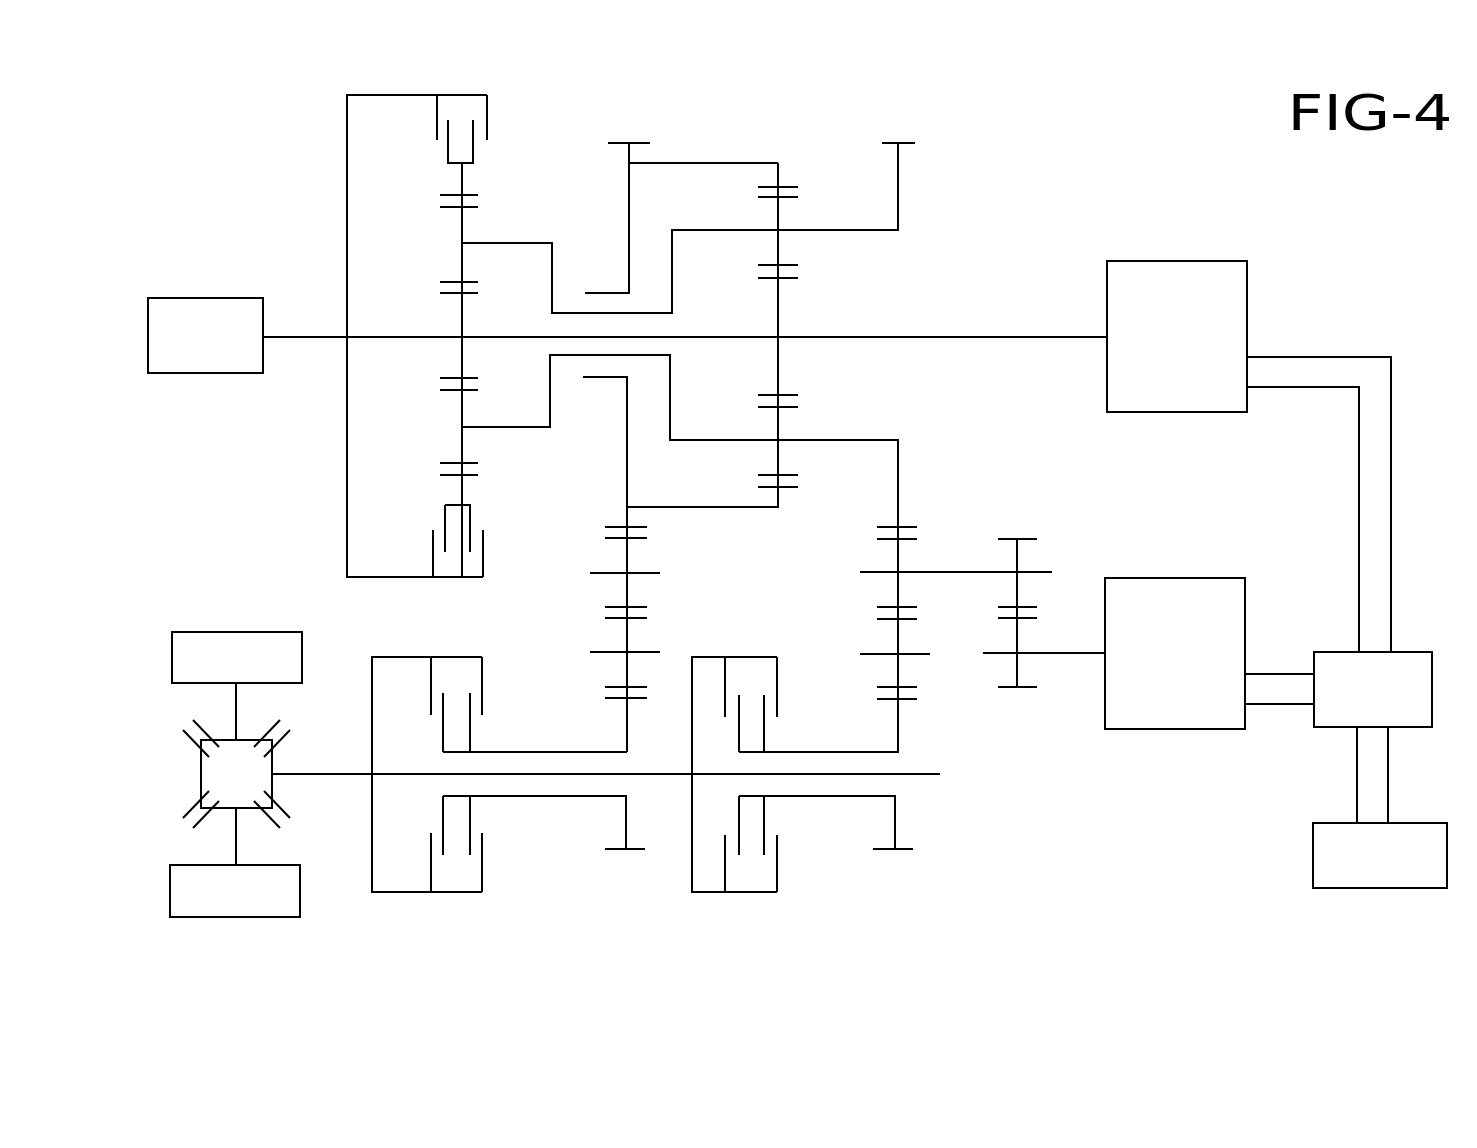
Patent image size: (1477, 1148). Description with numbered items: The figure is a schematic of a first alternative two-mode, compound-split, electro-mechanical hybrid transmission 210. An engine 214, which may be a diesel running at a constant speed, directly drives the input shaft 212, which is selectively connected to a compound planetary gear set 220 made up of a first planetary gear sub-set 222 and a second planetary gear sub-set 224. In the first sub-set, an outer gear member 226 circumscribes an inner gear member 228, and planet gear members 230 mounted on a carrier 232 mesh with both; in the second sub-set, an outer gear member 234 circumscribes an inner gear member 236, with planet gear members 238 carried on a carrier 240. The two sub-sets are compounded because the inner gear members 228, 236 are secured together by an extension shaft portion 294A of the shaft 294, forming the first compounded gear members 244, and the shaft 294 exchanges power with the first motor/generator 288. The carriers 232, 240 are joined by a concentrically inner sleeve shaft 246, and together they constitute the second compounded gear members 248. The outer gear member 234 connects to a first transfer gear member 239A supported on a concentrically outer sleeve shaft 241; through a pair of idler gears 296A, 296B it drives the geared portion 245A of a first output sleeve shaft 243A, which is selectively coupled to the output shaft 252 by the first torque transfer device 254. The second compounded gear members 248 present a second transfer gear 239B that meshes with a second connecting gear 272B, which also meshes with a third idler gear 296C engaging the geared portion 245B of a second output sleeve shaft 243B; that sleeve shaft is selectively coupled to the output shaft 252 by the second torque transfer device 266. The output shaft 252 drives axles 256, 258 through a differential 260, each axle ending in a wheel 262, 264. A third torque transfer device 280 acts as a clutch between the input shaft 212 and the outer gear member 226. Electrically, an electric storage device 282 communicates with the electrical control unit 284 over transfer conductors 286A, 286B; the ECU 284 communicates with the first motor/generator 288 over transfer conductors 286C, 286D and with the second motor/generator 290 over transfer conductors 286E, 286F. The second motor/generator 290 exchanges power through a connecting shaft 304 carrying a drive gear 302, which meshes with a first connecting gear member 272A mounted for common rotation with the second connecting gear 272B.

The hybrid transmission 210 is at (1022, 226).
The input shaft 212 is at (300, 337).
The engine 214 is at (205, 335).
The compound planetary gear set 220 is at (667, 152).
The first planetary gear sub-set 222 is at (521, 172).
The second planetary gear sub-set 224 is at (758, 153).
The outer gear member 226 is at (456, 190).
The inner gear member 228 is at (458, 322).
The planet gear members 230 is at (458, 230).
The carrier 232 is at (520, 243).
The outer gear member 234 is at (780, 172).
The inner gear member 236 is at (780, 308).
The planet gear members 238 is at (780, 212).
The first transfer gear member 239A is at (630, 517).
The second transfer gear 239B is at (900, 472).
The carrier 240 is at (713, 440).
The concentrically outer sleeve shaft 241 is at (598, 378).
The first output sleeve shaft 243A is at (543, 752).
The second output sleeve shaft 243B is at (830, 752).
The first compounded gear members 244 is at (516, 338).
The geared portion 245A is at (625, 828).
The geared portion 245B is at (897, 828).
The concentrically inner sleeve shaft 246 is at (672, 354).
The second compounded gear members 248 is at (574, 290).
The output shaft 252 is at (323, 774).
The first torque transfer device 254 is at (482, 875).
The axle 256 is at (236, 703).
The axle 258 is at (236, 845).
The differential 260 is at (201, 775).
The wheel 262 is at (237, 657).
The wheel 264 is at (235, 891).
The second torque transfer device 266 is at (777, 875).
The first connecting gear member 272A is at (1020, 557).
The second connecting gear 272B is at (896, 557).
The third torque transfer device 280 is at (415, 543).
The electric storage device 282 is at (1380, 855).
The electrical control unit 284 is at (1373, 689).
The transfer conductor 286A is at (1357, 795).
The transfer conductor 286B is at (1390, 793).
The transfer conductor 286C is at (1303, 357).
The transfer conductor 286D is at (1305, 387).
The transfer conductor 286E is at (1290, 674).
The transfer conductor 286F is at (1264, 704).
The first motor/generator 288 is at (1177, 336).
The second motor/generator 290 is at (1175, 653).
The shaft 294 is at (980, 337).
The extension shaft portion 294A is at (722, 337).
The idler gear 296A is at (624, 594).
The idler gear 296B is at (624, 638).
The third idler gear 296C is at (896, 638).
The drive gear 302 is at (1017, 670).
The connecting shaft 304 is at (1062, 654).